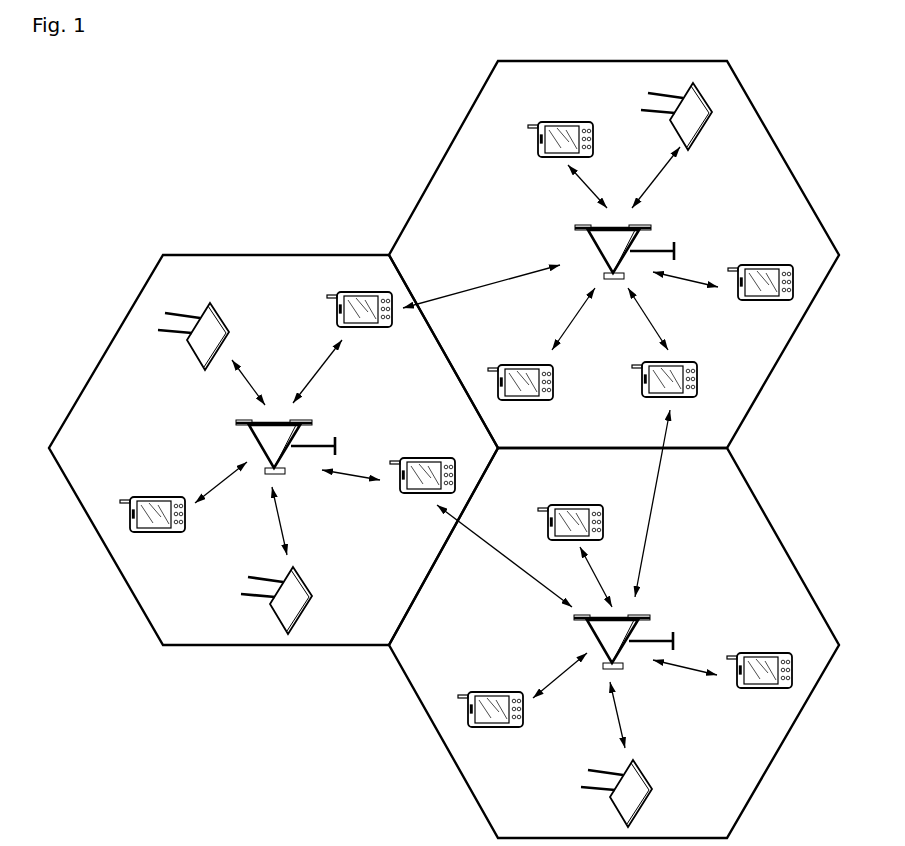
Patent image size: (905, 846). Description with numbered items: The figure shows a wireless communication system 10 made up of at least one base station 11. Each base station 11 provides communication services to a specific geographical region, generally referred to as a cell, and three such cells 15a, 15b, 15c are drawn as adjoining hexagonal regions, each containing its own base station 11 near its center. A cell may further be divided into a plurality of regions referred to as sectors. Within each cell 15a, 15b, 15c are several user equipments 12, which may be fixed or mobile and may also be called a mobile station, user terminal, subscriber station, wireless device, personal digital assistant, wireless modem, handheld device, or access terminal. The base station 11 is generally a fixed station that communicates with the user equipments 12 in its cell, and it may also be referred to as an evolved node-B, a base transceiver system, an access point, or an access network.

The wireless communication system 10 is at (166, 175).
The base station 11 is at (251, 435).
The user equipment 12 is at (190, 345).
The cell 15a is at (262, 255).
The cell 15b is at (460, 128).
The cell 15c is at (460, 771).